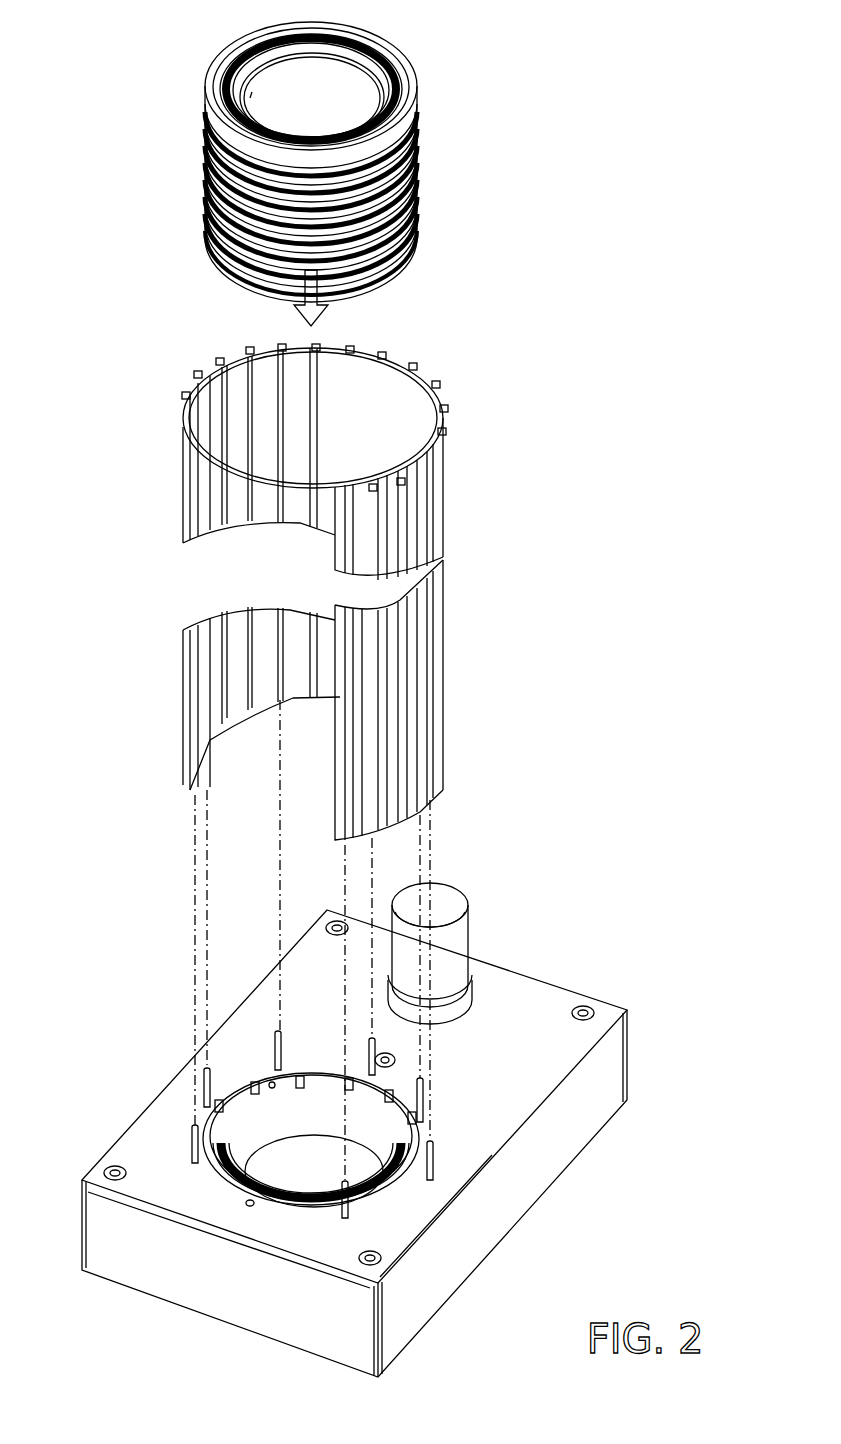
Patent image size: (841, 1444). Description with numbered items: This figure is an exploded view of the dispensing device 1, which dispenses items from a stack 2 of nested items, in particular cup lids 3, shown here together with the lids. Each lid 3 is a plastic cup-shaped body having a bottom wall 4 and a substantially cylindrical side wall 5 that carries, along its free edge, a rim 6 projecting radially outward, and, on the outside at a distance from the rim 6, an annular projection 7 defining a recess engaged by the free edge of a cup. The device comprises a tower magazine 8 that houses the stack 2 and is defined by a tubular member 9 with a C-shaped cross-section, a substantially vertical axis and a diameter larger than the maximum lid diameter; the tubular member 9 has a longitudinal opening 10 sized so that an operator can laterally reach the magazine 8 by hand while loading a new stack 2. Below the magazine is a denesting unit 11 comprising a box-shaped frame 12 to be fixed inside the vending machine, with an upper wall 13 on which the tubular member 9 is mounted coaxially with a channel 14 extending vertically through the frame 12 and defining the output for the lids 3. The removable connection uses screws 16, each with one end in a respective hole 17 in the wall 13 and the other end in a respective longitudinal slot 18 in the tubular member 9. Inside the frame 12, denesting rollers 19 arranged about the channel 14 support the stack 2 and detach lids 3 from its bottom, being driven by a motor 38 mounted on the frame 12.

The dispensing device 1 is at (622, 284).
The stack 2 is at (425, 183).
The cup lid 3 is at (423, 68).
The bottom wall 4 is at (228, 56).
The side wall 5 is at (350, 42).
The rim 6 is at (207, 112).
The annular projection 7 is at (392, 60).
The tower magazine 8 is at (450, 690).
The tubular member 9 is at (433, 507).
The longitudinal opening 10 is at (340, 788).
The denesting unit 11 is at (636, 1069).
The box-shaped frame 12 is at (545, 1169).
The upper wall 13 is at (530, 1019).
The channel 14 is at (275, 1100).
The screws 16 is at (355, 1205).
The hole 17 is at (244, 1203).
The longitudinal slot 18 is at (440, 440).
The denesting rollers 19 is at (203, 1117).
The motor 38 is at (463, 930).